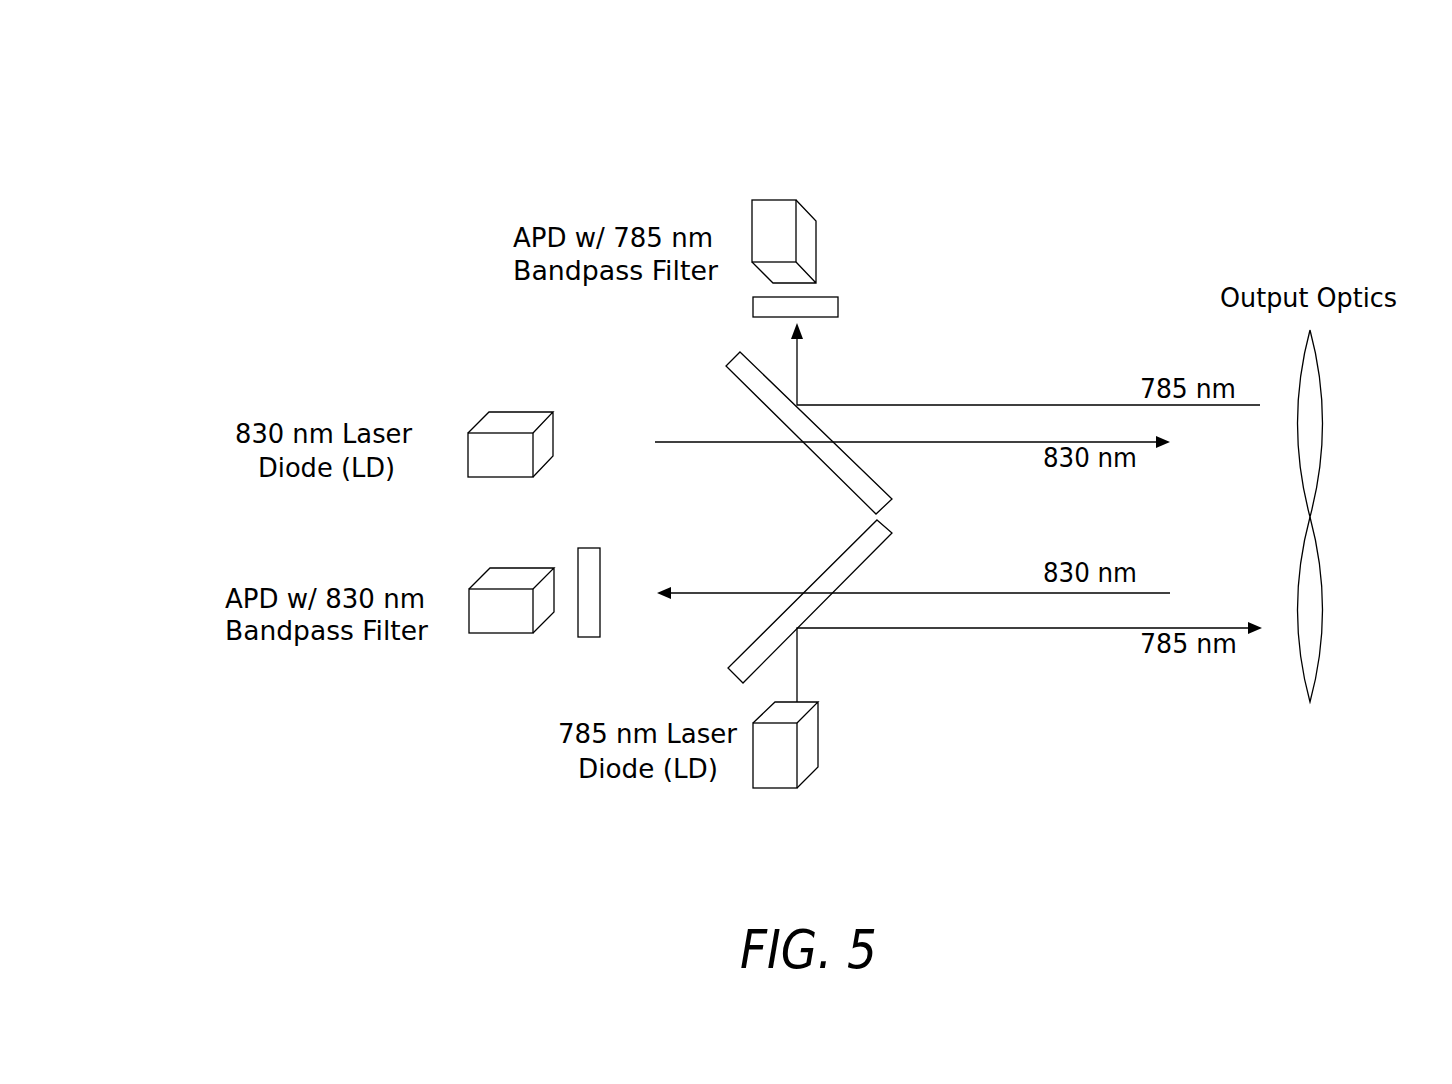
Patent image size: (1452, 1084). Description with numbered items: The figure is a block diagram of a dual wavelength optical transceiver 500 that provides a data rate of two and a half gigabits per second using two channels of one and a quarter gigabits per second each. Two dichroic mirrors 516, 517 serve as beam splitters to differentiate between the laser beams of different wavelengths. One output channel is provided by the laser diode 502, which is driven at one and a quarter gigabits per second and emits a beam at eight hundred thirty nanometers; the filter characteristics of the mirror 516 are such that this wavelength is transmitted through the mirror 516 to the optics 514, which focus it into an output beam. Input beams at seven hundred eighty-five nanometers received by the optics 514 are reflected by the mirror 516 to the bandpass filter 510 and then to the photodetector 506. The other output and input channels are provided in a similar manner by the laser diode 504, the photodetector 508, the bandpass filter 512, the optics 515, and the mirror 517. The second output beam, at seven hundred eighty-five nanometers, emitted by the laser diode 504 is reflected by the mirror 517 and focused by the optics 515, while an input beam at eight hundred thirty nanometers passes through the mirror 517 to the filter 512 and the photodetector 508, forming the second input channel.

The dual wavelength optical transceiver 500 is at (368, 165).
The laser diode 502 is at (521, 410).
The laser diode 504 is at (820, 740).
The photodetector 506 is at (818, 250).
The photodetector 508 is at (500, 633).
The bandpass filter 510 is at (840, 307).
The bandpass filter 512 is at (590, 548).
The optics 514 is at (1328, 415).
The optics 515 is at (1328, 617).
The dichroic mirror 516 is at (858, 465).
The dichroic mirror 517 is at (858, 568).